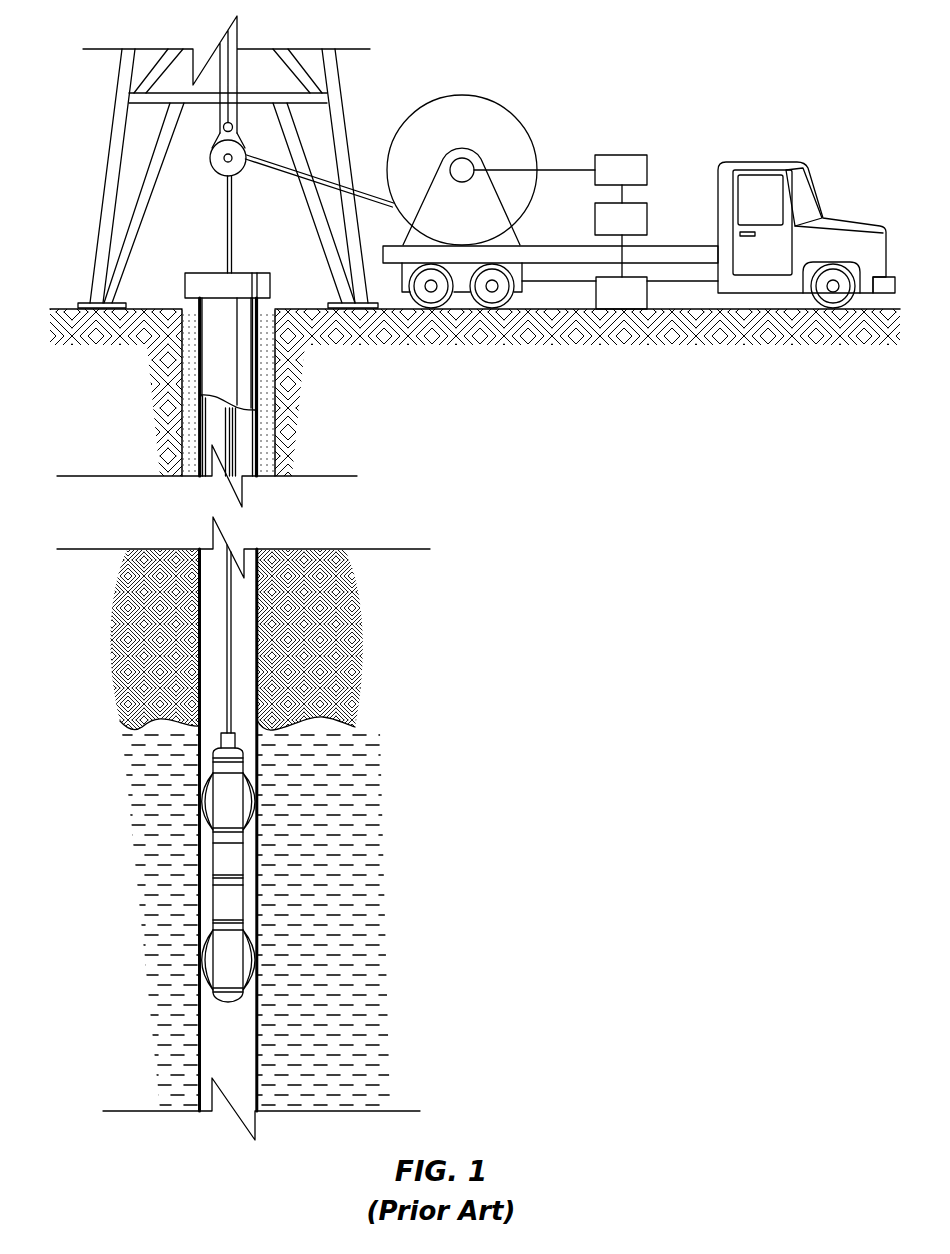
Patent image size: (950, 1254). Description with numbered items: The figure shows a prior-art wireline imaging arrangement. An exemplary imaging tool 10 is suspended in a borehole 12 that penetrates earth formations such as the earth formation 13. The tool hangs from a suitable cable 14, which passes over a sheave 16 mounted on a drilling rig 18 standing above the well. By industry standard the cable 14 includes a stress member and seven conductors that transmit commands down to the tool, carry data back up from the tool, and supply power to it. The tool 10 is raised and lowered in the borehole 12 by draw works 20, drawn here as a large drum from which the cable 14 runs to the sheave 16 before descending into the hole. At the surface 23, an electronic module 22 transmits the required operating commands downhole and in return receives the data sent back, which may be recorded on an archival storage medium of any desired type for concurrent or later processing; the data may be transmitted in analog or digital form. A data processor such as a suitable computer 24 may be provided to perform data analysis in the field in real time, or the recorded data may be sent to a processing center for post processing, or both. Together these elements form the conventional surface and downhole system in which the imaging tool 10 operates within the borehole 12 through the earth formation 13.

The imaging tool 10 is at (245, 858).
The borehole 12 is at (250, 628).
The earth formation 13 is at (395, 673).
The cable 14 is at (226, 247).
The sheave 16 is at (211, 157).
The drilling rig 18 is at (110, 104).
The draw works 20 is at (462, 95).
The electronic module 22 is at (640, 155).
The surface 23 is at (66, 308).
The computer 24 is at (640, 203).